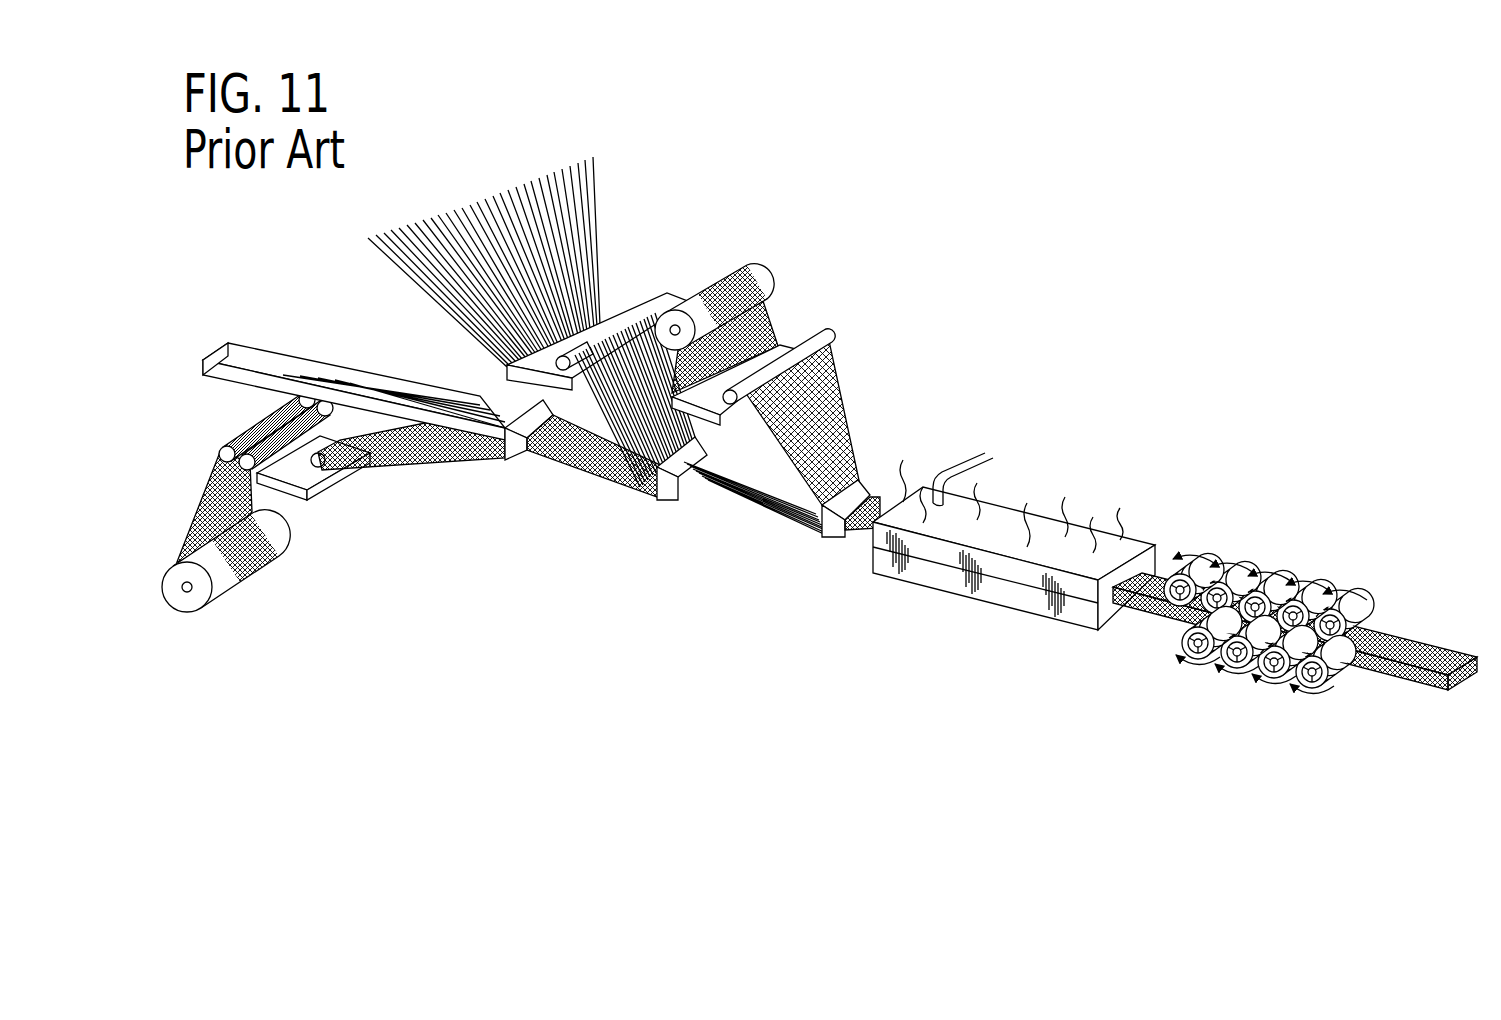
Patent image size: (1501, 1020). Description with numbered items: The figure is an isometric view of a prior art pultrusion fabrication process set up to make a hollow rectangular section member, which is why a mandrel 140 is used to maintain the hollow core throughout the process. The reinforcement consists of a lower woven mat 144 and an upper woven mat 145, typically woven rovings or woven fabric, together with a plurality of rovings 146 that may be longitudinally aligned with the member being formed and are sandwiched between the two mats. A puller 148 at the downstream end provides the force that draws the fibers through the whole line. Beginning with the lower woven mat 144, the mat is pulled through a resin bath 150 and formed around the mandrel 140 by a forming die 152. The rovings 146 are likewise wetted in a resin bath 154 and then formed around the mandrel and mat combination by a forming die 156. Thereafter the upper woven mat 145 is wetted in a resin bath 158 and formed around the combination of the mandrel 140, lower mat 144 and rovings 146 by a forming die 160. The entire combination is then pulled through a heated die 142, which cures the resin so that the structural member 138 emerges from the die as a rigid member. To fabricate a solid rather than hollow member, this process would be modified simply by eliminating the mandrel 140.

The structural member 138 is at (1470, 638).
The mandrel 140 is at (348, 380).
The heated die 142 is at (995, 525).
The lower woven mat 144 is at (258, 573).
The upper woven mat 145 is at (752, 280).
The rovings 146 is at (470, 205).
The puller 148 is at (1310, 552).
The resin bath 150 is at (333, 490).
The forming die 152 is at (513, 450).
The resin bath 154 is at (617, 312).
The forming die 156 is at (668, 500).
The resin bath 158 is at (770, 350).
The forming die 160 is at (833, 538).